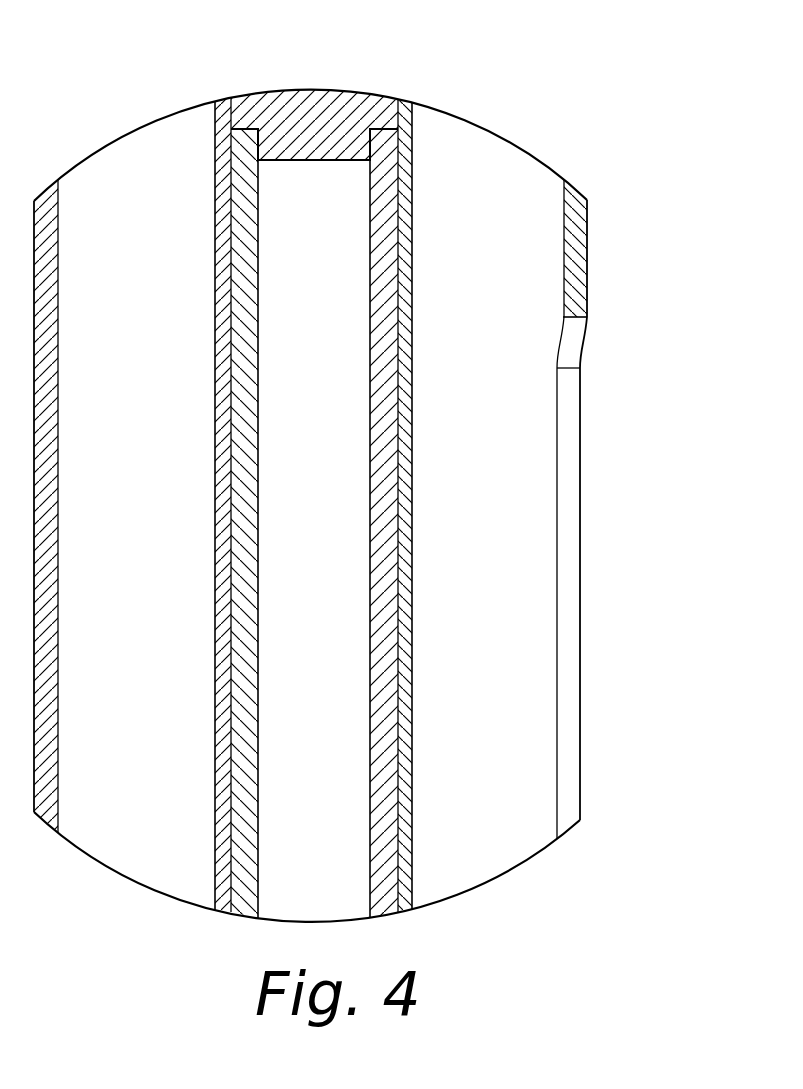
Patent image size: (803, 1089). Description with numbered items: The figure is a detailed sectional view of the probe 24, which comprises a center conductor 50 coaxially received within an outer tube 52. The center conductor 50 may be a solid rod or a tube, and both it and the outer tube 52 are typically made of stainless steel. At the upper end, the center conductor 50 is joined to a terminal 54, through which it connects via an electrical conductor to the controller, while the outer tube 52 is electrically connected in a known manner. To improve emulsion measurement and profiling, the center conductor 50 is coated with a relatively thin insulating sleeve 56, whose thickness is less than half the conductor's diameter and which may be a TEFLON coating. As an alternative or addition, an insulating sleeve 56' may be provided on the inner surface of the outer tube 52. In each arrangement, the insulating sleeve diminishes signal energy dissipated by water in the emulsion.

The probe 24 is at (614, 207).
The center conductor 50 is at (352, 407).
The outer tube 52 is at (590, 300).
The terminal 54 is at (350, 93).
The insulating sleeve 56 is at (342, 505).
The insulating sleeve 56' is at (310, 450).